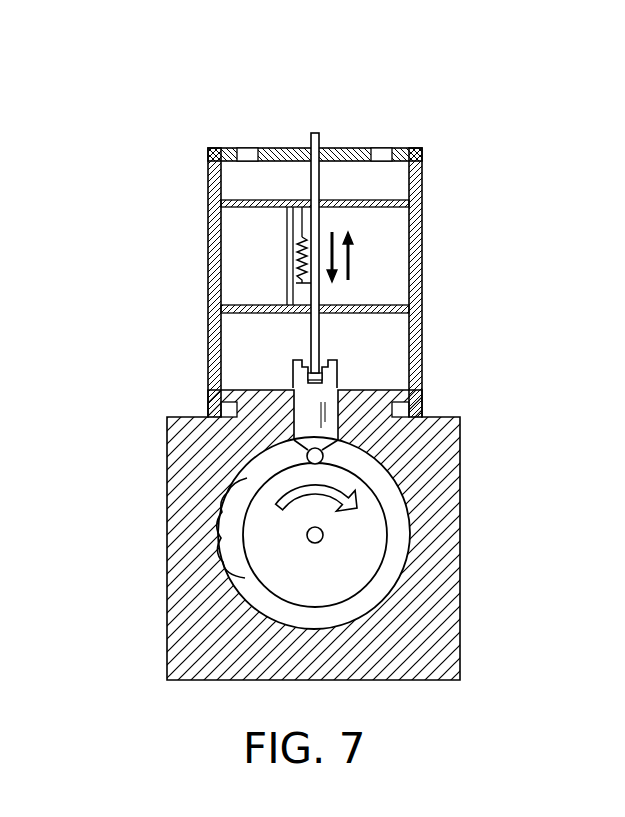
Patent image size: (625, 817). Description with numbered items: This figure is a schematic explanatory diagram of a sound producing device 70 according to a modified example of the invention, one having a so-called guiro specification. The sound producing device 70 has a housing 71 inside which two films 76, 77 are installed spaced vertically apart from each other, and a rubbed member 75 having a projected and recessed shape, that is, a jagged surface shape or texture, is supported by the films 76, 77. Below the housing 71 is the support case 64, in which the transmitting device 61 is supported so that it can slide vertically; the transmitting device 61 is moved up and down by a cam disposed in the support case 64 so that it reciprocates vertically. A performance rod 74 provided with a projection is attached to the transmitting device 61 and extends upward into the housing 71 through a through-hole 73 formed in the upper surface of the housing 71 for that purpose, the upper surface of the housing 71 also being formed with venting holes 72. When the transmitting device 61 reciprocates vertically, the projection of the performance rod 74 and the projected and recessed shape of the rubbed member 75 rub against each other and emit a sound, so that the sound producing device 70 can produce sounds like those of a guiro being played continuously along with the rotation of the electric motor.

The sound producing device 70 is at (316, 221).
The housing 71 is at (208, 186).
The venting holes 72 is at (243, 157).
The through-hole 73 is at (332, 222).
The performance rod 74 is at (318, 337).
The rubbed member 75 is at (291, 257).
The film 76 is at (382, 200).
The film 77 is at (380, 305).
The transmitting device 61 is at (307, 426).
The support case 64 is at (164, 484).